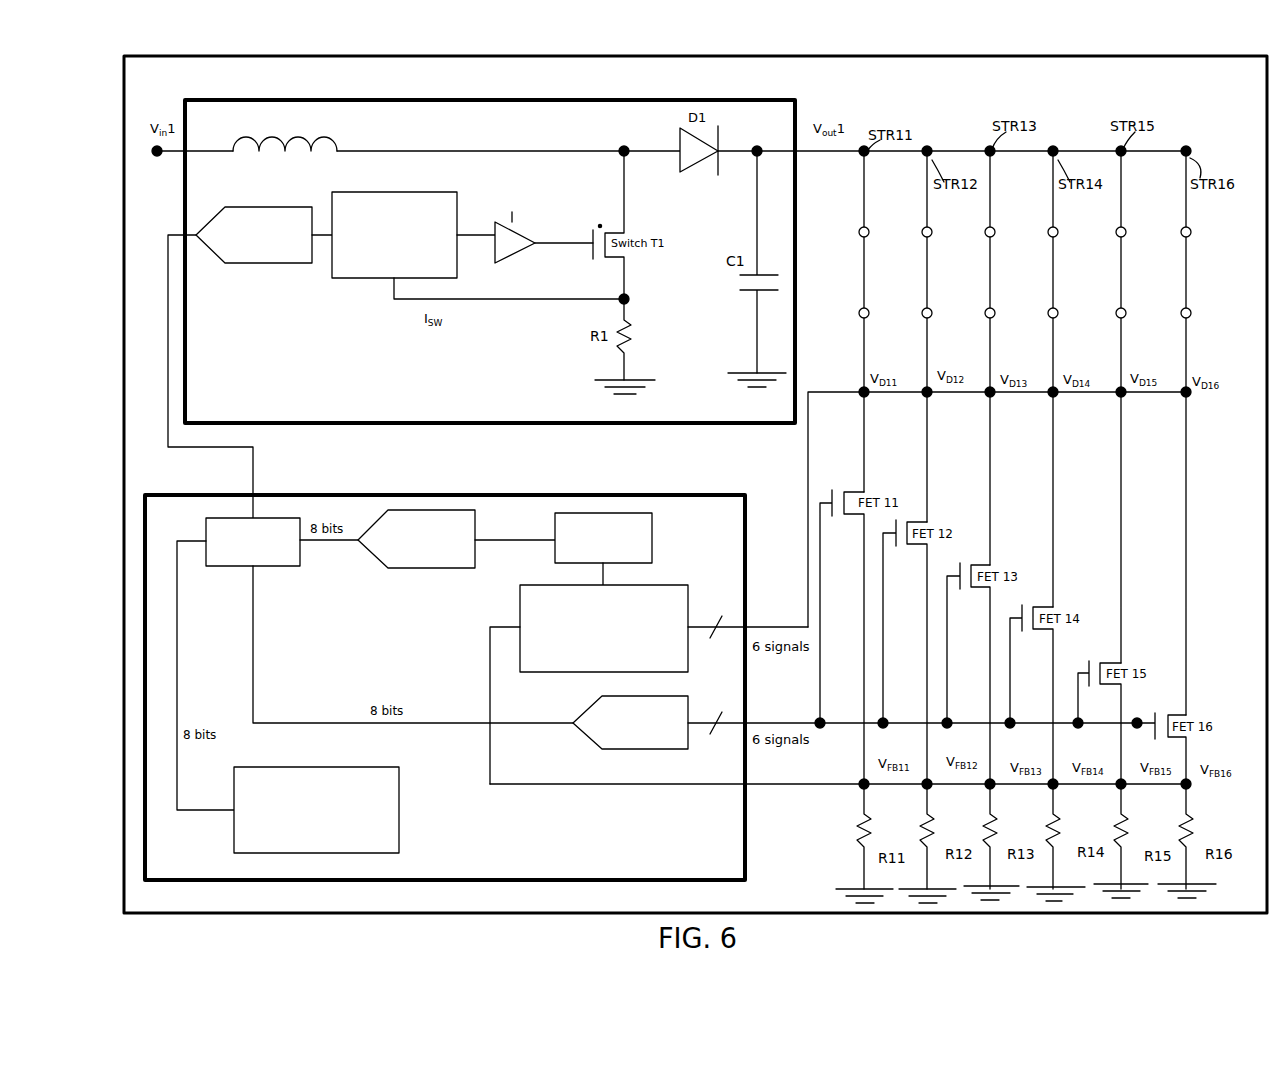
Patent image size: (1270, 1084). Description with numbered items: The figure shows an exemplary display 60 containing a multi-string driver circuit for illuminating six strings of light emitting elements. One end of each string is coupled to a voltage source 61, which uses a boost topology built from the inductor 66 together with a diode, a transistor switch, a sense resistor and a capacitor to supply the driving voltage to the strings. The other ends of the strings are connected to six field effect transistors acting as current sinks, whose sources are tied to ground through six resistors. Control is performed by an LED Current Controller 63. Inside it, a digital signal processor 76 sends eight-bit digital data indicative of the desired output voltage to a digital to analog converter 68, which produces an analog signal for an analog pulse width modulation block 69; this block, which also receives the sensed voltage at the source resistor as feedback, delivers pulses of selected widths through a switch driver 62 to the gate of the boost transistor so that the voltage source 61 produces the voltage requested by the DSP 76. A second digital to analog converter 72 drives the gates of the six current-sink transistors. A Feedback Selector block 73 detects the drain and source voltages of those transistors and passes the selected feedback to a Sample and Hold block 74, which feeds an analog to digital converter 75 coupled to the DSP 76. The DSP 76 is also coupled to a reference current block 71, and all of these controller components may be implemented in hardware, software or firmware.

The display 60 is at (1238, 111).
The voltage source 61 is at (708, 408).
The switch driver 62 is at (497, 225).
The LED Current Controller 63 is at (723, 858).
The inductor 66 is at (313, 140).
The digital to analog converter 68 is at (285, 264).
The analog pulse width modulation block 69 is at (411, 192).
The reference current block 71 is at (399, 788).
The digital to analog converter 72 is at (563, 748).
The Feedback Selector block 73 is at (561, 672).
The Sample and Hold block 74 is at (652, 522).
The analog to digital converter 75 is at (440, 567).
The digital signal processor 76 is at (270, 566).